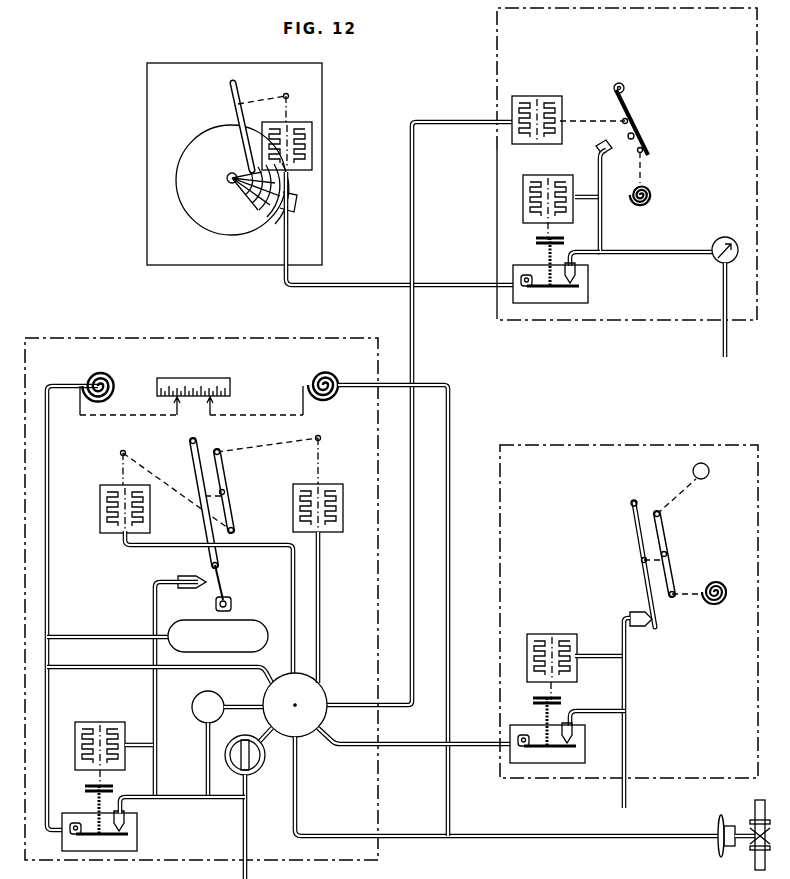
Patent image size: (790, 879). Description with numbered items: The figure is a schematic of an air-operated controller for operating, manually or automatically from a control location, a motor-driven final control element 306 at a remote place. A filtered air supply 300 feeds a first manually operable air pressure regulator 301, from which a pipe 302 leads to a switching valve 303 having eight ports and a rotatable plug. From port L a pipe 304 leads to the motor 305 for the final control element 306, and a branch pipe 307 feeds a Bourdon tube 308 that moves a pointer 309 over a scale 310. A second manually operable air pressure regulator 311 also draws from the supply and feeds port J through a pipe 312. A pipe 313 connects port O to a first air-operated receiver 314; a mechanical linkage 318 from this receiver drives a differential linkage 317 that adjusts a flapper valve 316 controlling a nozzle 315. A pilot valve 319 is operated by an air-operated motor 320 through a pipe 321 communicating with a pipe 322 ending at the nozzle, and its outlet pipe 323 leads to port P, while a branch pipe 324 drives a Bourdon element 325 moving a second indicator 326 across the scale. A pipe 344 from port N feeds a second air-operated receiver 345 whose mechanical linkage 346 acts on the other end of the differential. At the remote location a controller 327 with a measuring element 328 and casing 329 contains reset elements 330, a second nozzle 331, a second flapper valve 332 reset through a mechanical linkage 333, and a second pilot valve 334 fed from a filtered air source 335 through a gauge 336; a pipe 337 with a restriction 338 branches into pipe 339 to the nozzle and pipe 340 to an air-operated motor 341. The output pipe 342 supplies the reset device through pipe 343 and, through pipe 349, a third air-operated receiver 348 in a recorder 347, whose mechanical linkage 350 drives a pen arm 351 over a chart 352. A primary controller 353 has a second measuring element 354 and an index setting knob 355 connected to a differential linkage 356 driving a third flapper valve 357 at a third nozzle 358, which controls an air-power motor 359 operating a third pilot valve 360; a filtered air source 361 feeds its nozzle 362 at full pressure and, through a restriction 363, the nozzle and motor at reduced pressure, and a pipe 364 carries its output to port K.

The filtered air supply 300 is at (243, 870).
The first manually operable air pressure regulator 301 is at (192, 709).
The pipe 302 is at (248, 702).
The switching valve 303 is at (308, 740).
The pipe 304 is at (298, 804).
The motor 305 is at (719, 830).
The final control element 306 is at (752, 824).
The branch pipe 307 is at (446, 793).
The Bourdon tube 308 is at (324, 368).
The pointer 309 is at (284, 402).
The scale 310 is at (205, 376).
The second manually operable air pressure regulator 311 is at (257, 772).
The pipe 312 is at (266, 734).
The pipe 313 is at (322, 560).
The first air-operated receiver 314 is at (343, 496).
The nozzle 315 is at (208, 580).
The flapper valve 316 is at (220, 584).
The differential linkage 317 is at (230, 474).
The mechanical linkage 318 is at (273, 433).
The pilot valve 319 is at (66, 849).
The air-operated motor 320 is at (104, 706).
The pipe 321 is at (140, 744).
The pipe 322 is at (153, 602).
The outlet pipe 323 is at (133, 670).
The branch pipe 324 is at (47, 563).
The Bourdon element 325 is at (106, 357).
The second indicator 326 is at (153, 405).
The controller 327 is at (482, 45).
The measuring element 328 is at (650, 191).
The controller casing 329 is at (497, 190).
The relatively movable elements 330 is at (545, 96).
The second nozzle 331 is at (627, 135).
The second flapper valve 332 is at (634, 132).
The mechanical linkage 333 is at (594, 118).
The second pilot valve 334 is at (587, 296).
The source of filtered air pressure 335 is at (722, 292).
The gauge 336 is at (725, 237).
The pipe 337 is at (603, 240).
The restriction 338 is at (603, 223).
The pipe 339 is at (600, 147).
The pipe 340 is at (590, 194).
The air-operated motor 341 is at (537, 175).
The pipe 342 is at (474, 270).
The pipe 343 is at (412, 209).
The pipe 344 is at (291, 604).
The second air-operated receiver 345 is at (100, 496).
The mechanical linkage 346 is at (180, 490).
The recorder 347 is at (132, 79).
The third air-operated receiver 348 is at (312, 132).
The pipe 349 is at (337, 283).
The mechanical linkage 350 is at (282, 83).
The pen arm 351 is at (228, 96).
The chart 352 is at (203, 218).
The primary controller 353 is at (637, 440).
The second measuring element 354 is at (730, 578).
The index setting knob 355 is at (692, 471).
The differential linkage 356 is at (666, 531).
The third flapper valve 357 is at (639, 530).
The third nozzle 358 is at (638, 614).
The air-power motor 359 is at (555, 622).
The third pilot valve 360 is at (566, 766).
The source of filtered air 361 is at (628, 740).
The nozzle 362 is at (578, 733).
The restriction 363 is at (628, 684).
The pipe 364 is at (394, 745).